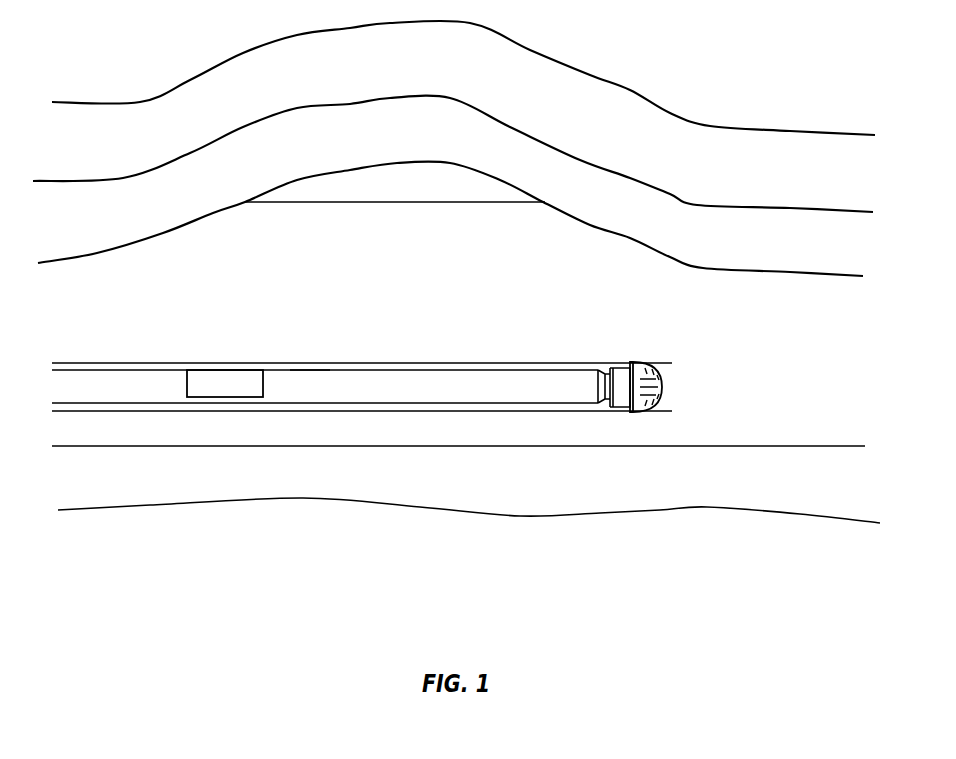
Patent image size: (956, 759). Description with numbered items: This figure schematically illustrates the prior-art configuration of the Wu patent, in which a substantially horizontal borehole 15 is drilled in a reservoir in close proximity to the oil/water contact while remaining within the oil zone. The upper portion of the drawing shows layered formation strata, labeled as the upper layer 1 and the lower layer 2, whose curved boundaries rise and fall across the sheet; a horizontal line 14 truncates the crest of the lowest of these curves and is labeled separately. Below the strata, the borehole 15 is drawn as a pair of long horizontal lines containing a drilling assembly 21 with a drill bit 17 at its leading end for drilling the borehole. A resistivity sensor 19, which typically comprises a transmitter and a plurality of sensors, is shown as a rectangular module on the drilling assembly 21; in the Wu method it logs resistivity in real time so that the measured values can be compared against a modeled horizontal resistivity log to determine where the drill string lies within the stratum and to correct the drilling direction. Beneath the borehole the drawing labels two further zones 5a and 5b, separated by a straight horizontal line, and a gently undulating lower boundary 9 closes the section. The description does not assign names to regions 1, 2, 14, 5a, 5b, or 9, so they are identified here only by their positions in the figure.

The upper formation layer 1 is at (796, 188).
The lower formation layer 2 is at (796, 258).
The fluid contact / boundary line 14 is at (405, 203).
The upper borehole 5a is at (808, 382).
The second borehole 5b is at (808, 493).
The formation boundary 9 is at (798, 555).
The borehole 15 is at (422, 362).
The drill bit 17 is at (620, 370).
The resistivity sensor 19 is at (213, 378).
The drilling assembly 21 is at (307, 370).